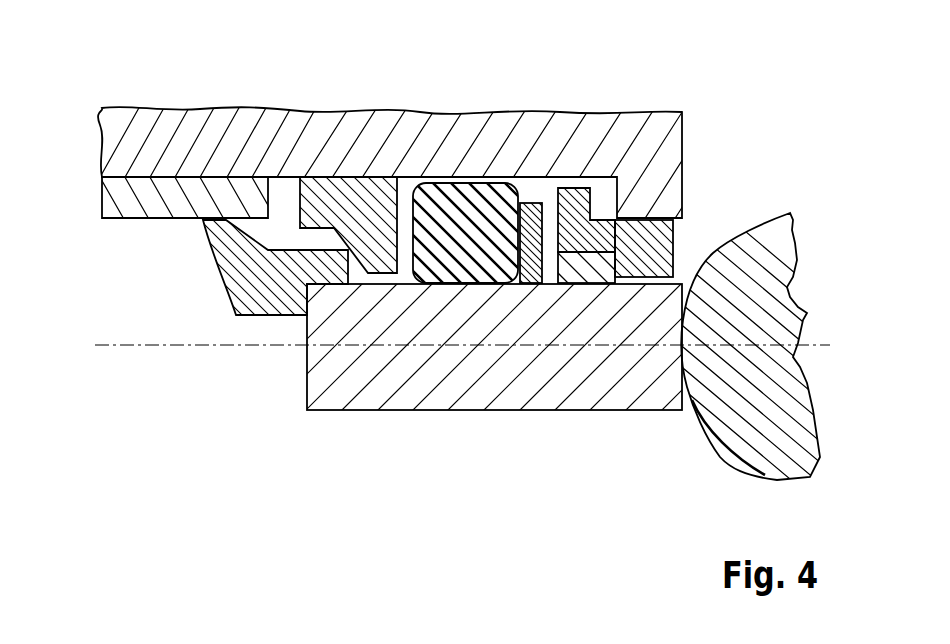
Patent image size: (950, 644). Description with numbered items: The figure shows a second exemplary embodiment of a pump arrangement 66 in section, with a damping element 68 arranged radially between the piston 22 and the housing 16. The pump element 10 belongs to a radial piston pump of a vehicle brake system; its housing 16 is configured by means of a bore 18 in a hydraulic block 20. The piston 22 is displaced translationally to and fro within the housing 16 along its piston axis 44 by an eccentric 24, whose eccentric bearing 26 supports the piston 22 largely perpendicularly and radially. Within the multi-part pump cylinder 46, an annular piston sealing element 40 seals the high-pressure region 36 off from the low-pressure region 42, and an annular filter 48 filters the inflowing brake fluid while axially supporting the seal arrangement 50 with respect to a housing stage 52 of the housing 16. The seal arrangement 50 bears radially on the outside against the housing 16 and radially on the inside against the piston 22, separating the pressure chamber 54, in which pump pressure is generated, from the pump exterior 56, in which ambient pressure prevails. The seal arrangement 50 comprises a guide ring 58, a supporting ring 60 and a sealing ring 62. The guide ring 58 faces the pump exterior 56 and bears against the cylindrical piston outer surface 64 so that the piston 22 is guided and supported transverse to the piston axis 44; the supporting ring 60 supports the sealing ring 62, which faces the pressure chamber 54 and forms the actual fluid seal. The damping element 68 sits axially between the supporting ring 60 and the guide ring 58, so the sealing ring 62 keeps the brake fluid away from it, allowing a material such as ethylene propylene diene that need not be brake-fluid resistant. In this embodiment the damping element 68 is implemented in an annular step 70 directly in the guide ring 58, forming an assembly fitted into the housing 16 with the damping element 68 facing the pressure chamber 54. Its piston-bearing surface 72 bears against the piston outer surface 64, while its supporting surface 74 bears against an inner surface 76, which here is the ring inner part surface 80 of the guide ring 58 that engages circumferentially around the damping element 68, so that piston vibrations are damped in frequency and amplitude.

The pump element 10 is at (84, 124).
The housing 16 is at (124, 130).
The bore 18 is at (100, 238).
The hydraulic block 20 is at (103, 162).
The piston 22 is at (447, 390).
The eccentric 24 is at (741, 483).
The eccentric bearing 26 is at (771, 234).
The high-pressure region 36 is at (138, 301).
The piston sealing element 40 is at (229, 258).
The low-pressure region 42 is at (283, 203).
The piston axis 44 is at (137, 352).
The pump cylinder 46 is at (178, 200).
The filter 48 is at (358, 285).
The seal arrangement 50 is at (455, 200).
The housing stage 52 is at (634, 198).
The pressure chamber 54 is at (334, 238).
The pump exterior 56 is at (686, 262).
The guide ring 58 is at (580, 215).
The supporting ring 60 is at (528, 203).
The sealing ring 62 is at (461, 198).
The piston outer surface 64 is at (658, 411).
The pump arrangement 66 is at (485, 91).
The damping element 68 is at (598, 285).
The annular step 70 is at (631, 236).
The piston-bearing surface 72 is at (596, 283).
The supporting surface 74 is at (586, 262).
The inner surface 76 is at (590, 262).
The ring inner part surface 80 is at (578, 255).